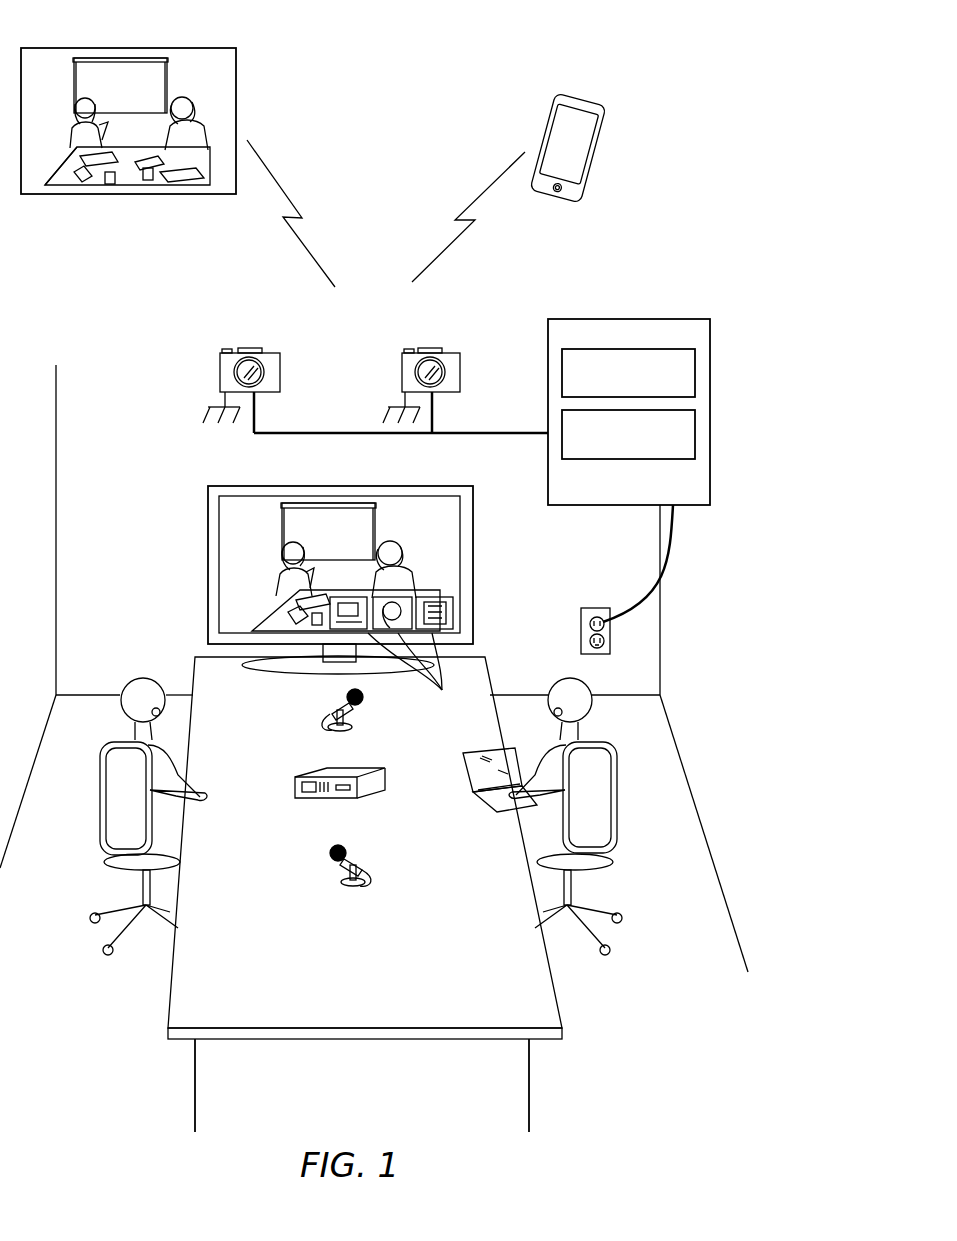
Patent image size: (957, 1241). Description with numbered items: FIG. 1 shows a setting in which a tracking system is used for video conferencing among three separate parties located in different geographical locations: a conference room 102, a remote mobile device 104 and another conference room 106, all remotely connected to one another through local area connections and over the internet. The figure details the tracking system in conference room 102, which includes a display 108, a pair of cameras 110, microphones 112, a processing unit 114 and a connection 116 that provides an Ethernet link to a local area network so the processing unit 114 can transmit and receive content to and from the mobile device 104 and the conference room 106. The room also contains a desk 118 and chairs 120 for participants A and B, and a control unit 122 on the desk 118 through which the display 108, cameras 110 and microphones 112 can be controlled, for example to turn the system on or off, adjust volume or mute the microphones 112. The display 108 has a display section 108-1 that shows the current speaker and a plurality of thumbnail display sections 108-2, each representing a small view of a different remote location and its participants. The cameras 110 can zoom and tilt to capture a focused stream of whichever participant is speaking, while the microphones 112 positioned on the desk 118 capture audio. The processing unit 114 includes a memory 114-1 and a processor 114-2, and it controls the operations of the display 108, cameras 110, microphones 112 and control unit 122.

The conference room 102 is at (143, 383).
The remote mobile device 104 is at (578, 100).
The conference room 106 is at (133, 47).
The display 108 is at (332, 594).
The display section 108-1 is at (210, 550).
The thumbnail display sections 108-2 is at (417, 649).
The cameras 110 is at (247, 350).
The microphones 112 is at (325, 703).
The processing unit 114 is at (629, 413).
The memory 114-1 is at (583, 349).
The processor 114-2 is at (610, 459).
The connection 116 is at (580, 624).
The desk 118 is at (552, 965).
The chairs 120 is at (100, 800).
The control unit 122 is at (300, 776).